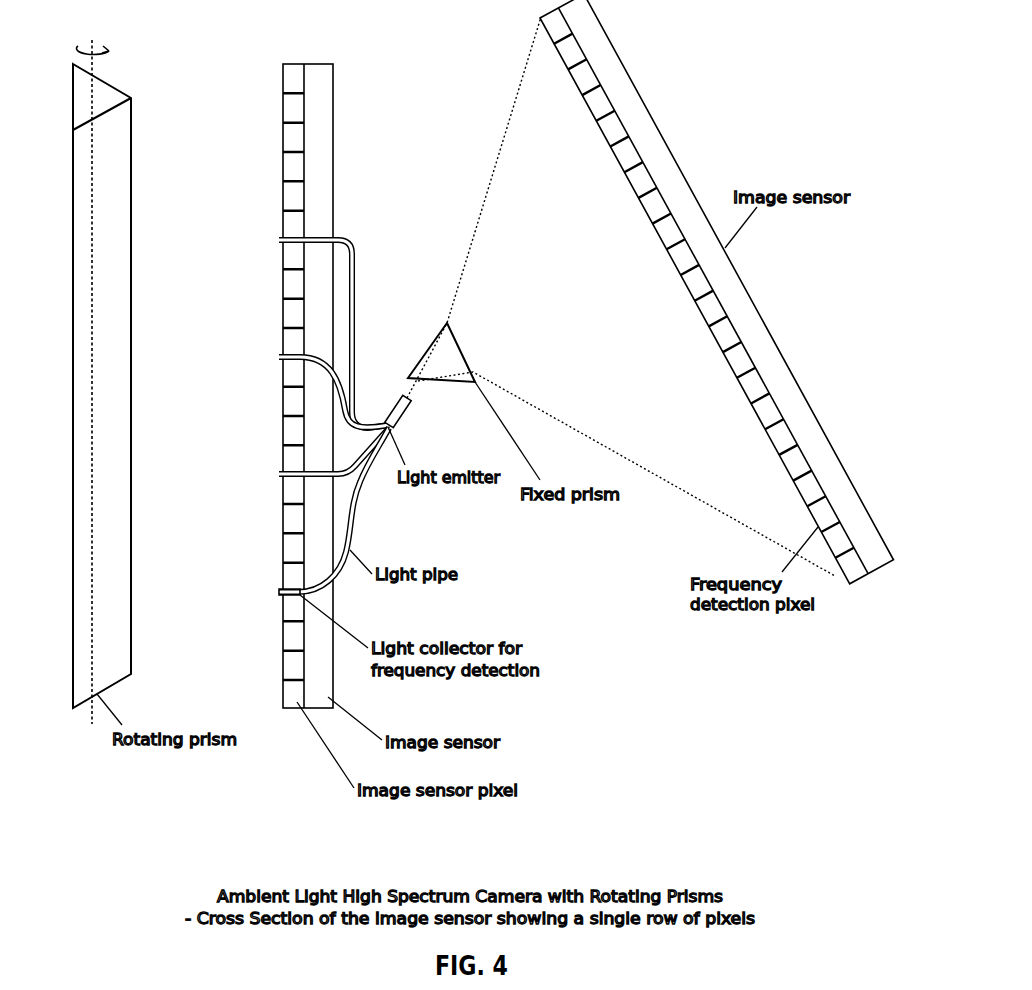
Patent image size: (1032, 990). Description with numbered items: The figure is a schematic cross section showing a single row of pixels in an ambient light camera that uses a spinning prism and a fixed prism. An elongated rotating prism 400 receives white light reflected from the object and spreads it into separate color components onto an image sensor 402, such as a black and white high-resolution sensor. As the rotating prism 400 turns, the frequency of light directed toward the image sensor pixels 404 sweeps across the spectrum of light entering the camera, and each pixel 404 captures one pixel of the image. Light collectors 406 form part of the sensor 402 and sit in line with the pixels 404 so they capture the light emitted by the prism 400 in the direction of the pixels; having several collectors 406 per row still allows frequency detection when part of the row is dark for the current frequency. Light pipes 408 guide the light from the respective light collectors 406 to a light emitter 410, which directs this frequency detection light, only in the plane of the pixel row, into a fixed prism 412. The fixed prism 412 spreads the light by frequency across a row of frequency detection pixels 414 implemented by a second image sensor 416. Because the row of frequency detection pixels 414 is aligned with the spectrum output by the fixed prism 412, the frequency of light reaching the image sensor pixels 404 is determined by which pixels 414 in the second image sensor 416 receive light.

The rotating prism 400 is at (131, 127).
The image sensor 402 is at (330, 97).
The image sensor pixels 404 is at (284, 435).
The light collectors 406 is at (290, 597).
The light pipes 408 is at (355, 508).
The light emitter 410 is at (406, 410).
The fixed prism 412 is at (458, 345).
The frequency detection pixels 414 is at (748, 392).
The second image sensor 416 is at (655, 127).